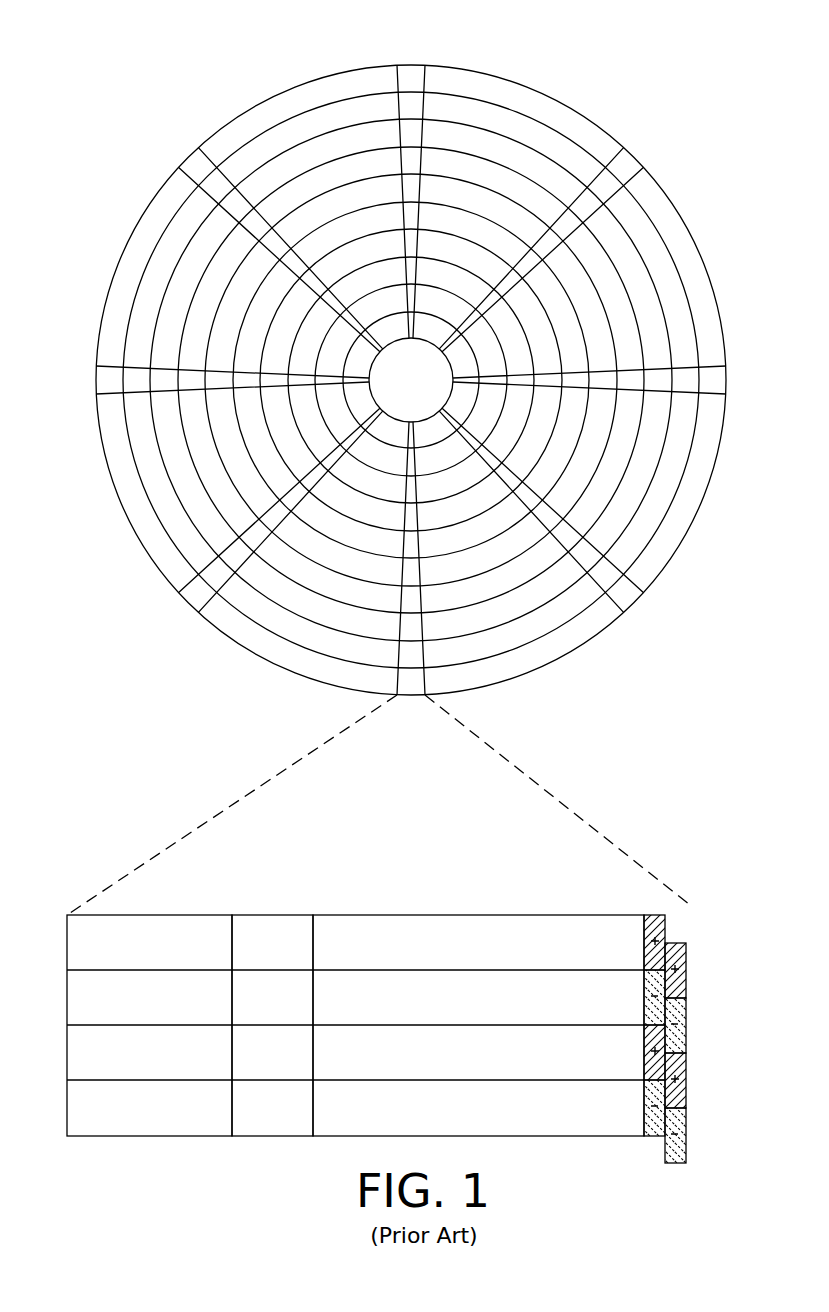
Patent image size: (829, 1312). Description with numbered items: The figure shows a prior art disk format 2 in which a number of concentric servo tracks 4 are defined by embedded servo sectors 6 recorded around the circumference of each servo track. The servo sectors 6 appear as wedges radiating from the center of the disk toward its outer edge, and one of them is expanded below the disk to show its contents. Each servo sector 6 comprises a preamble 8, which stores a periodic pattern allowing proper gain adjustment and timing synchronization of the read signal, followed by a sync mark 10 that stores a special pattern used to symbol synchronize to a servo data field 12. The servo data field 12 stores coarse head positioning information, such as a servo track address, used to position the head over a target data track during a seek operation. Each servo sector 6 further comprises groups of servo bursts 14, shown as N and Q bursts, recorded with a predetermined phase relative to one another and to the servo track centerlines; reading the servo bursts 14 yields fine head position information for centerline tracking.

The disk format 2 is at (411, 390).
The servo tracks 4 is at (540, 108).
The servo sectors 6 is at (412, 72).
The preamble 8 is at (156, 914).
The sync mark 10 is at (275, 914).
The servo data field 12 is at (466, 914).
The servo bursts 14 is at (692, 906).